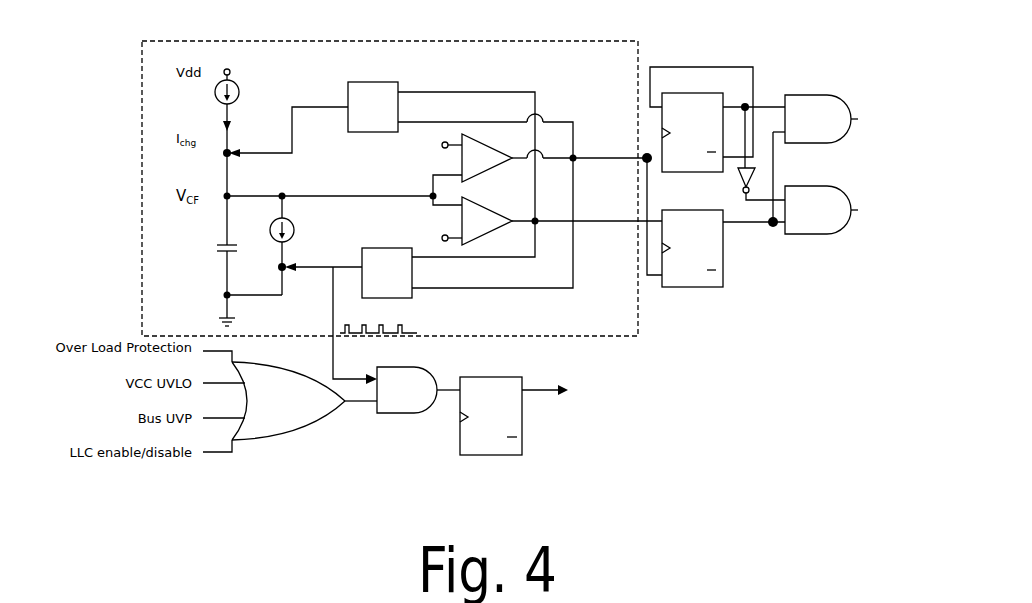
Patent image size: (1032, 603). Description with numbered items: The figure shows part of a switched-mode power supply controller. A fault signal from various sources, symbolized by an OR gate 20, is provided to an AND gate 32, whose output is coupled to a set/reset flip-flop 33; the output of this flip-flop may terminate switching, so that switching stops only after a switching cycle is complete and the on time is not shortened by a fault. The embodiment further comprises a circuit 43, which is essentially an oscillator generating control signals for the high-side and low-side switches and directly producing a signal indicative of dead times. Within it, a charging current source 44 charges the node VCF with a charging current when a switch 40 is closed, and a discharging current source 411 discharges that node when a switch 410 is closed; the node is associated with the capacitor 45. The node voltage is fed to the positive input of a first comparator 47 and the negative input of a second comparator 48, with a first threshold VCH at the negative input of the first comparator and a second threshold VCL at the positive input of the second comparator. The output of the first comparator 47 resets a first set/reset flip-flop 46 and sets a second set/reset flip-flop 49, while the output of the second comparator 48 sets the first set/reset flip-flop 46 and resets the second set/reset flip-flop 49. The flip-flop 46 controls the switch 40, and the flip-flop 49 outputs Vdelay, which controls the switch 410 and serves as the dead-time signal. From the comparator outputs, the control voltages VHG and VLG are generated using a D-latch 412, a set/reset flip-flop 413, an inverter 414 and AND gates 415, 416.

The OR gate 20 is at (273, 437).
The AND gate 32 is at (409, 413).
The set/reset flip-flop 33 is at (522, 427).
The switch 40 is at (235, 151).
The circuit 43 is at (632, 336).
The charging current source 44 is at (213, 96).
The capacitor CF 45 is at (214, 248).
The first set/reset flip-flop 46 is at (378, 82).
The first comparator 47 is at (483, 142).
The second comparator 48 is at (492, 238).
The second set/reset flip-flop 49 is at (378, 248).
The switch 410 is at (278, 268).
The discharging current source 411 is at (268, 228).
The D-latch 412 is at (698, 93).
The set/reset flip-flop 413 is at (723, 275).
The inverter 414 is at (753, 168).
The AND gate 415 is at (818, 98).
The AND gate 416 is at (838, 190).